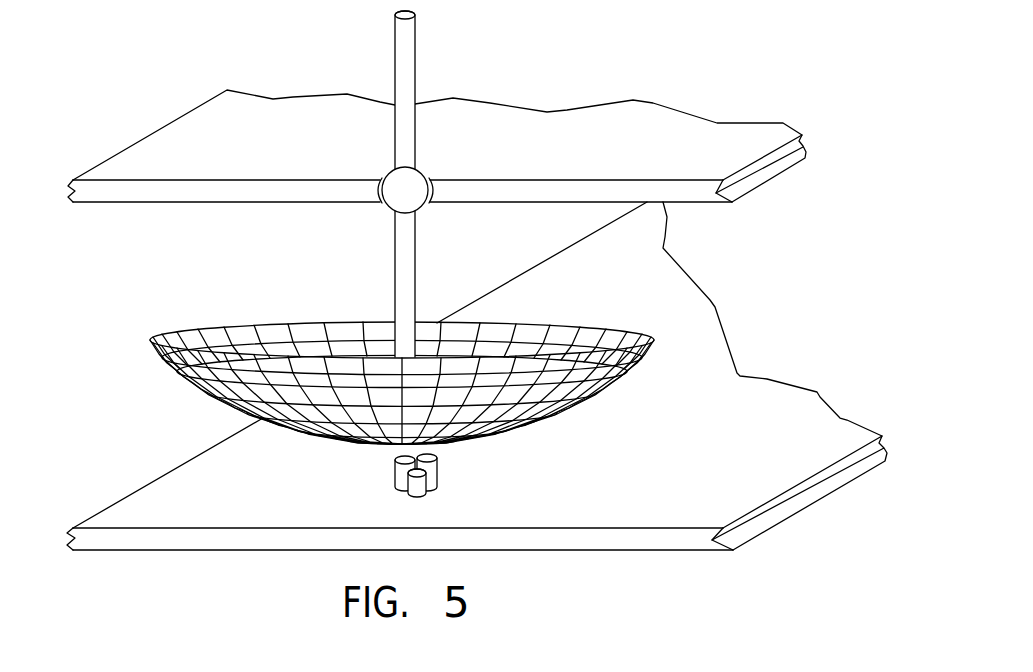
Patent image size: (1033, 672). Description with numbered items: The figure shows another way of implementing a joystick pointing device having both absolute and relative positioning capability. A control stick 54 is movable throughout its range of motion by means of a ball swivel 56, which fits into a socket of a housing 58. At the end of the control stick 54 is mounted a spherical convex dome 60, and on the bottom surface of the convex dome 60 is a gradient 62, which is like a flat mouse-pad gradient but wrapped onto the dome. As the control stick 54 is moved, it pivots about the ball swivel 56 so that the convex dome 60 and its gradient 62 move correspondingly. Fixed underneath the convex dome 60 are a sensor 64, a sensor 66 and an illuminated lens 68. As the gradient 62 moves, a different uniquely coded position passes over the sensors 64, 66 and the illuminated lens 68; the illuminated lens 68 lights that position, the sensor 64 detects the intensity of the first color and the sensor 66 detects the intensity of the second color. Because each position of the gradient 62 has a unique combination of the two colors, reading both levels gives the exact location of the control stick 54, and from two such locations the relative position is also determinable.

The control stick 54 is at (408, 55).
The ball swivel 56 is at (394, 184).
The housing 58 is at (667, 121).
The convex dome 60 is at (174, 378).
The gradient 62 is at (562, 388).
The sensor 64 is at (395, 474).
The sensor 66 is at (438, 471).
The illuminated lens 68 is at (416, 490).